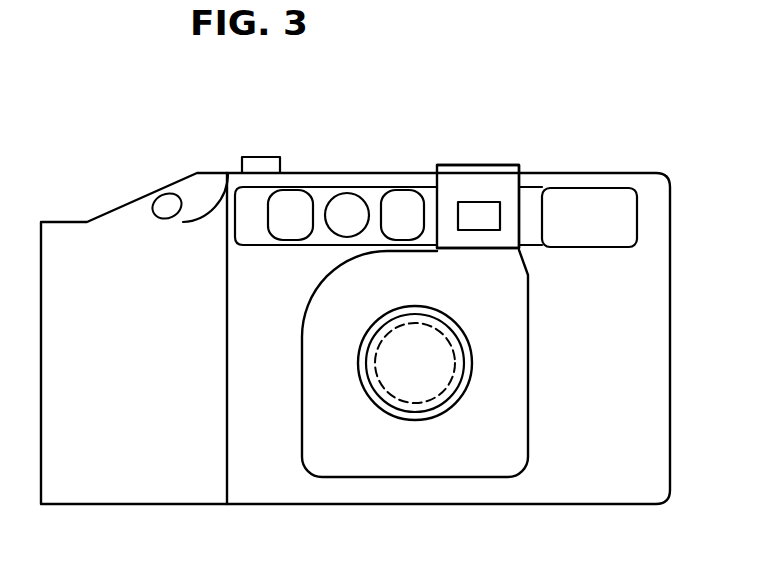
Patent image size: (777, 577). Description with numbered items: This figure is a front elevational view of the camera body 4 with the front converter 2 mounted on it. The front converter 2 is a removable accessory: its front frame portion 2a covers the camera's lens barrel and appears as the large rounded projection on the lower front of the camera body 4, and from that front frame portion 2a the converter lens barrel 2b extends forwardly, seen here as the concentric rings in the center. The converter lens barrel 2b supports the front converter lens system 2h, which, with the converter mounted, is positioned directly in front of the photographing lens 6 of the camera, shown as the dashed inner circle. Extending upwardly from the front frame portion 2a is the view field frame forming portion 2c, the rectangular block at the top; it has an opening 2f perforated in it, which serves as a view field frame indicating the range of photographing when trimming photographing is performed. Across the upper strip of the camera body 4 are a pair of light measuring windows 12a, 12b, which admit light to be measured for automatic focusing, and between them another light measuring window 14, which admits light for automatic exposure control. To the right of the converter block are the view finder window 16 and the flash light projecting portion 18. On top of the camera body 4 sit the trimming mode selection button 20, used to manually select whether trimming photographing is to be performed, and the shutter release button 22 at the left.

The front converter 2 is at (481, 165).
The front frame portion 2a is at (513, 323).
The converter lens barrel 2b is at (453, 407).
The view field frame forming portion 2c is at (498, 178).
The opening 2f is at (470, 207).
The front converter lens system 2h is at (402, 410).
The camera body 4 is at (355, 364).
The photographing lens 6 is at (443, 337).
The light measuring window 12a is at (298, 195).
The light measuring window 12b is at (402, 192).
The light measuring window 14 is at (349, 200).
The view finder window 16 is at (530, 197).
The flash light projecting portion 18 is at (600, 193).
The trimming mode selection button 20 is at (255, 157).
The shutter release button 22 is at (173, 197).